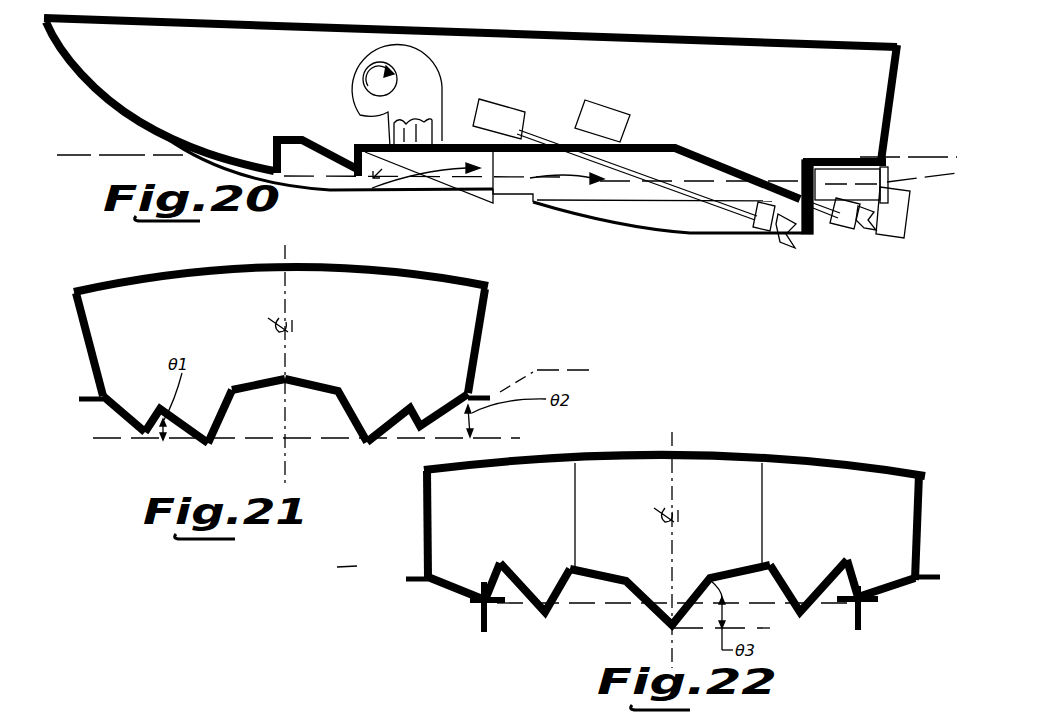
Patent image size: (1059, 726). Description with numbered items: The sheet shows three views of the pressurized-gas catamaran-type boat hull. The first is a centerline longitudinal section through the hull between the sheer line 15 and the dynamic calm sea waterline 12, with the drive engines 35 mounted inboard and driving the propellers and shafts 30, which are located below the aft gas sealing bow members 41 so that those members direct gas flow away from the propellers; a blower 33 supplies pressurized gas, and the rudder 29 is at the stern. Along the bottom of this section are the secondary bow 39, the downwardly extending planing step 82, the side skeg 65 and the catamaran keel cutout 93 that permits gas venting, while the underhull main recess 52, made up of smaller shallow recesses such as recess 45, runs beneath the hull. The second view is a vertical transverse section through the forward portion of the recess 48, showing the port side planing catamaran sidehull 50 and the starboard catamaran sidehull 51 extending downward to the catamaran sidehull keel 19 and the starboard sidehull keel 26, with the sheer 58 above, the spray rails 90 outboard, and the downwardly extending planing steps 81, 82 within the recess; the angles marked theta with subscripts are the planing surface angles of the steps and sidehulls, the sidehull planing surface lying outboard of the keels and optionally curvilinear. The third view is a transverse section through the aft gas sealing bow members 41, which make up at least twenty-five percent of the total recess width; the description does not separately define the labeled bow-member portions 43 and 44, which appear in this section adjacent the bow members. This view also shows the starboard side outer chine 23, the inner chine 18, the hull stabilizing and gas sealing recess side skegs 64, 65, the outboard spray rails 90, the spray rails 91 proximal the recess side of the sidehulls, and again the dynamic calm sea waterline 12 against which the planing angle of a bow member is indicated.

In FIG. 20, the dynamic calm sea waterline 12 is at (115, 155).
In FIG. 21, the dynamic calm sea waterline 12 is at (262, 440).
In FIG. 22, the dynamic calm sea waterline 12 is at (400, 578).
In FIG. 20, the port side sheer line 15 is at (470, 89).
In FIG. 21, the port side sheer line 15 is at (492, 288).
In FIG. 22, the port side sheer line 15 is at (926, 470).
In FIG. 22, the inner chine 18 is at (904, 592).
In FIG. 22, the catamaran sidehull keel 19 is at (866, 612).
In FIG. 22, the starboard side outer chine 23 is at (428, 590).
In FIG. 21, the starboard sidehull keel 26 is at (148, 434).
In FIG. 22, the starboard sidehull keel 26 is at (476, 607).
In FIG. 20, the rudder 29 is at (900, 229).
In FIG. 20, the propellers and shafts 30 is at (736, 219).
In FIG. 20, the blower 33 is at (420, 107).
In FIG. 20, the drive engines 35 is at (502, 106).
In FIG. 20, the secondary bow 39 is at (525, 140).
In FIG. 22, the aft gas sealing bow member 41 is at (532, 606).
In FIG. 22, the outer strake 43 is at (845, 585).
In FIG. 22, the inner strake 44 is at (490, 580).
In FIG. 20, the recess 45 is at (322, 140).
In FIG. 21, the recess 48 is at (251, 393).
In FIG. 22, the recess 48 is at (640, 602).
In FIG. 21, the port side planing catamaran sidehull 50 is at (440, 398).
In FIG. 21, the starboard catamaran sidehull 51 is at (113, 412).
In FIG. 21, the underhull main recess 52 is at (321, 392).
In FIG. 22, the underhull main recess 52 is at (521, 580).
In FIG. 20, the sheer 58 is at (269, 106).
In FIG. 21, the sheer 58 is at (73, 290).
In FIG. 22, the sheer 58 is at (422, 470).
In FIG. 22, the side skeg 64 is at (855, 626).
In FIG. 20, the side skeg 65 is at (680, 225).
In FIG. 22, the side skeg 65 is at (484, 633).
In FIG. 21, the downwardly extending planing step 81 is at (371, 441).
In FIG. 20, the downwardly extending planing step 82 is at (478, 188).
In FIG. 21, the downwardly extending planing step 82 is at (186, 433).
In FIG. 21, the spray rails 90 is at (86, 397).
In FIG. 22, the spray rails 90 is at (961, 561).
In FIG. 22, the spray rails 91 is at (844, 606).
In FIG. 20, the catamaran keel cutout 93 is at (524, 196).